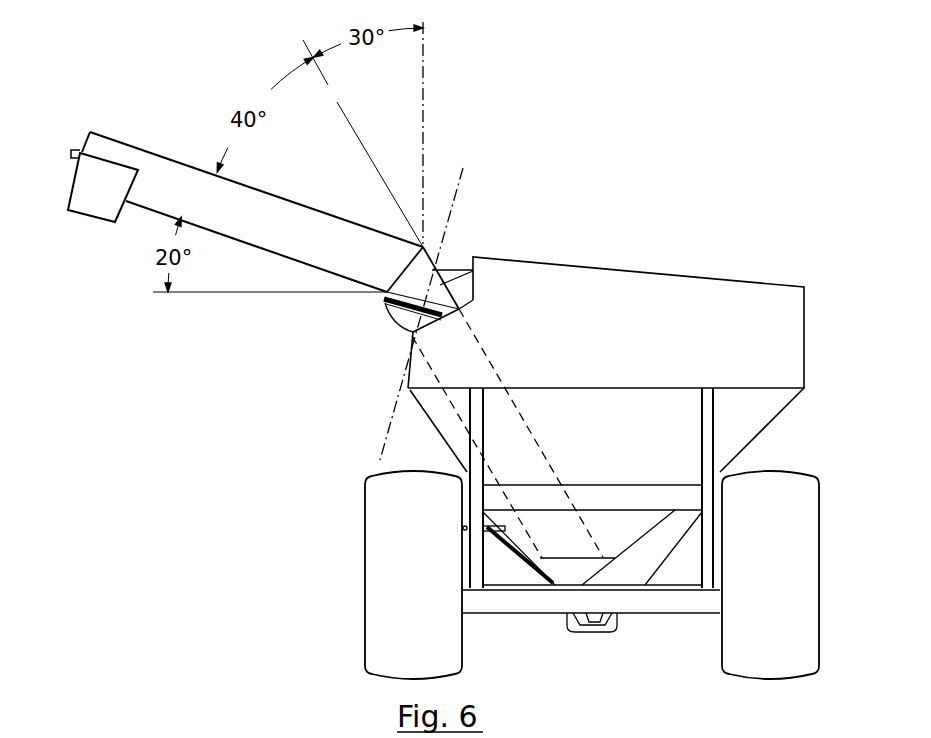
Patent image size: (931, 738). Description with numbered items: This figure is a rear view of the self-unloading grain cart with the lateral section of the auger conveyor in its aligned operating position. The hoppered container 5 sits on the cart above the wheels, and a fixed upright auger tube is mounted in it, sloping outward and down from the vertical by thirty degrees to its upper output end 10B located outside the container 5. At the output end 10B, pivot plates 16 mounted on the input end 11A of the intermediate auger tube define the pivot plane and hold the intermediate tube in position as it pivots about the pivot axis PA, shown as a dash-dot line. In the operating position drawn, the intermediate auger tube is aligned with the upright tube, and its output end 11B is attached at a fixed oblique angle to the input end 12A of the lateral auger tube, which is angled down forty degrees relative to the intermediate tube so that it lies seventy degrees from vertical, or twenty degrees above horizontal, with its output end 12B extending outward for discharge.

The container 5 is at (630, 302).
The upper output end of the upright auger tube 10B is at (399, 330).
The input end of the intermediate auger tube 11A is at (393, 314).
The output end of the intermediate auger tube 11B is at (355, 281).
The input end of the lateral auger tube 12A is at (407, 268).
The output end of the lateral auger tube 12B is at (104, 146).
The pivot plates 16 is at (390, 318).
The pivot axis PA is at (425, 302).